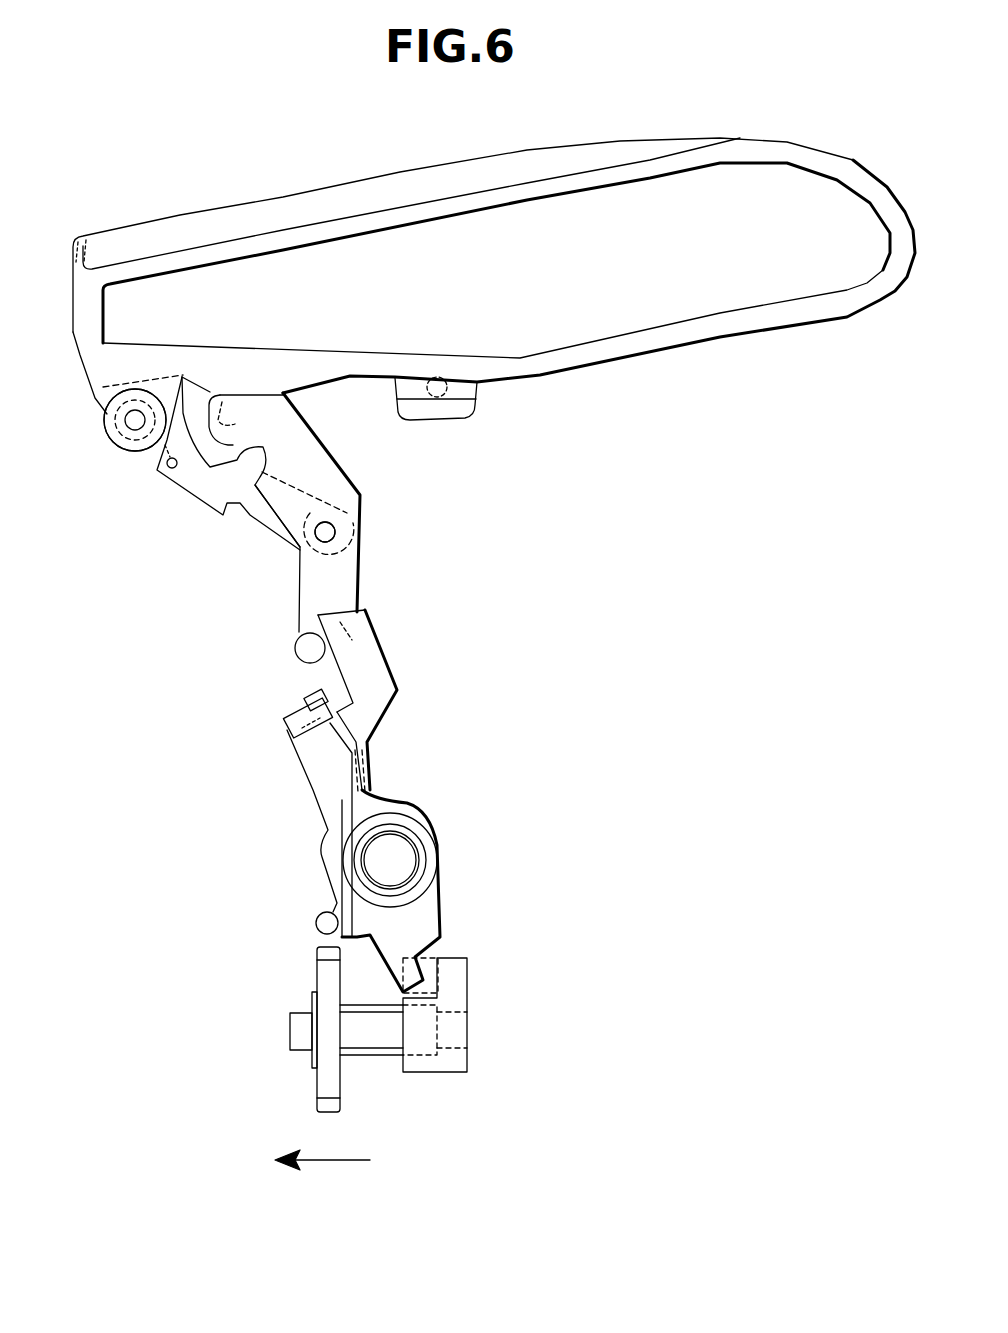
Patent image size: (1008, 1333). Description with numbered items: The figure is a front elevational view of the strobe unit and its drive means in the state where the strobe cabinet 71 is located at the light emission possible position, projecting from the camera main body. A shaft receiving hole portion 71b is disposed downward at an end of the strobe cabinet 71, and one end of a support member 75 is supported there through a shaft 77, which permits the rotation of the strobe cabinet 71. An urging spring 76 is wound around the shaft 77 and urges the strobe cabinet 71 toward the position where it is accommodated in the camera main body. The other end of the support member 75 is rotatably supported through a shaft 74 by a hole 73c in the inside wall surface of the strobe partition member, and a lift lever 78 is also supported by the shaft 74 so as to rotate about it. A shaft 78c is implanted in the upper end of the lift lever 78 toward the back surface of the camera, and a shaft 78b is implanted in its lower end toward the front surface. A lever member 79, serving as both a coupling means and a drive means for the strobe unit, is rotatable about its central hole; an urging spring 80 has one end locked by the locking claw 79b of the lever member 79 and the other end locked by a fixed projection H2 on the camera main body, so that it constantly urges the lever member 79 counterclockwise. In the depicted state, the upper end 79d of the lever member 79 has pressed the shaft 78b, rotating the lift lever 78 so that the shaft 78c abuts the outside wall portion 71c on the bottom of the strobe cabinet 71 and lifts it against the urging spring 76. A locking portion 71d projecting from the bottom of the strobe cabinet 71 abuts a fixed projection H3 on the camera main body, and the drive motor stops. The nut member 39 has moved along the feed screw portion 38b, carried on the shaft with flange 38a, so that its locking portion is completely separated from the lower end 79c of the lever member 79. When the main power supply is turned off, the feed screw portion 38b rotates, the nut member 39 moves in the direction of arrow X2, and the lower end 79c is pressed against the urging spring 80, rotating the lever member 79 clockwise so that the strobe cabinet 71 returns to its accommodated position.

The strobe cabinet 71 is at (660, 340).
The shaft receiving hole portion 71b is at (135, 420).
The outside wall portion 71c is at (245, 398).
The locking portion 71d is at (455, 408).
The fixed projection H3 is at (442, 378).
The shaft 77 is at (135, 422).
The support member 75 is at (218, 498).
The urging spring 76 is at (168, 468).
The lift lever 78 is at (355, 477).
The shaft 78b is at (307, 652).
The shaft 78c is at (235, 408).
The shaft 74 is at (327, 533).
The hole 73c is at (325, 532).
The lever member 79 is at (375, 705).
The locking claw 79b is at (295, 722).
The lower end 79c is at (428, 972).
The upper end 79d is at (363, 643).
The urging spring 80 is at (373, 760).
The fixed projection H2 is at (315, 924).
The nut member 39 is at (443, 1063).
The flange 38a is at (342, 1092).
The feed screw portion 38b is at (377, 1037).
The arrow X2 is at (322, 1173).